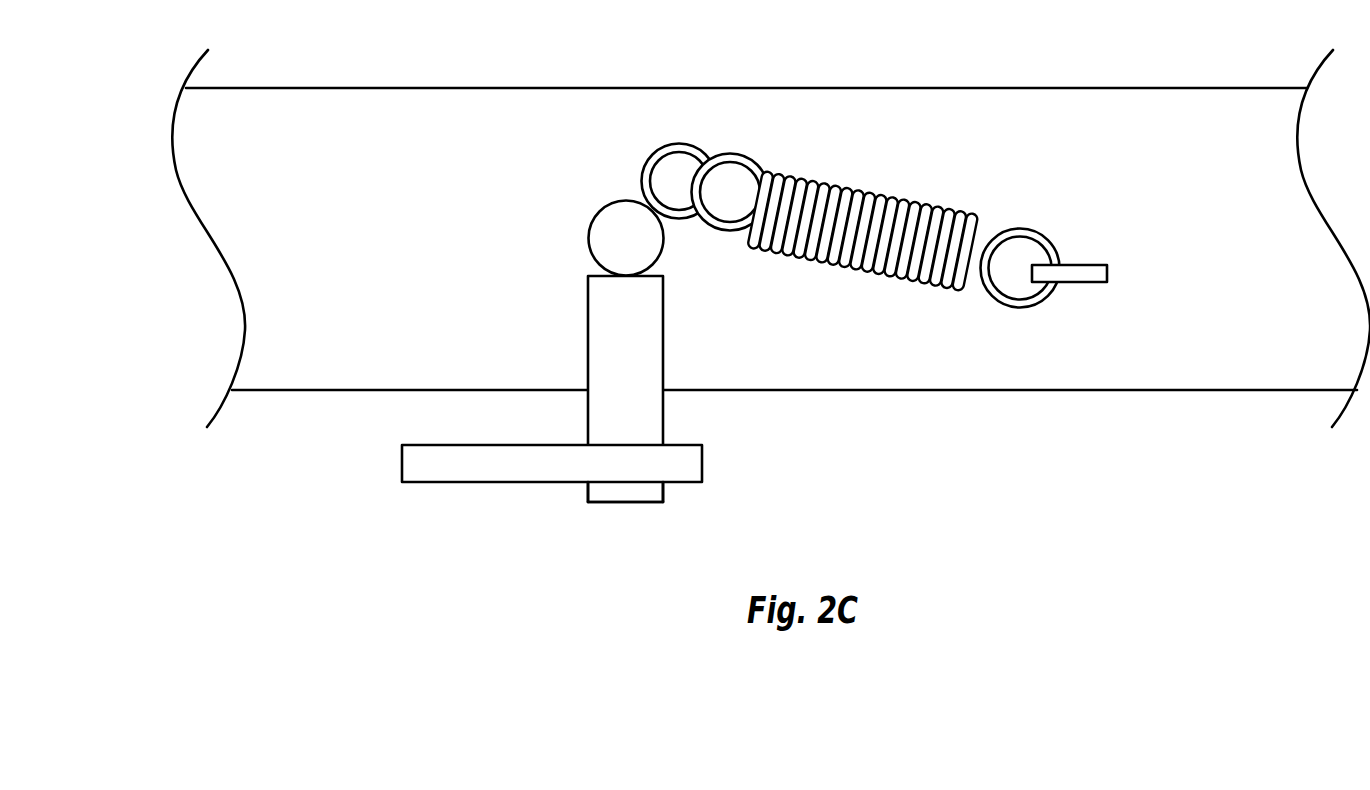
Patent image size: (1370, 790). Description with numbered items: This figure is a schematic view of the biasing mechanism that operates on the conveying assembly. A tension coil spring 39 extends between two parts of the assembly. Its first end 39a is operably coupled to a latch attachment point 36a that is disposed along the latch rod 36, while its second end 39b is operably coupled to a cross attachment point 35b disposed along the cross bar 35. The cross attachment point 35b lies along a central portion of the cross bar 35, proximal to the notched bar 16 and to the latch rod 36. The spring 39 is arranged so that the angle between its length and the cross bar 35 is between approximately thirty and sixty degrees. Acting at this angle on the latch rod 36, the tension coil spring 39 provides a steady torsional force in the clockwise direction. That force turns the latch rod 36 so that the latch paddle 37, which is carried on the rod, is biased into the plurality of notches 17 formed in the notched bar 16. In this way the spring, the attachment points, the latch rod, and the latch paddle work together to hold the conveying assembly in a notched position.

The notched bar 16 is at (432, 483).
The plurality of notches 17 is at (588, 483).
The cross bar 35 is at (1157, 145).
The cross attachment point 35b is at (1093, 283).
The latch rod 36 is at (597, 212).
The latch attachment point 36a is at (660, 148).
The latch paddle 37 is at (588, 352).
The tension coil spring 39 is at (877, 178).
The first end 39a is at (745, 155).
The second end 39b is at (1010, 308).